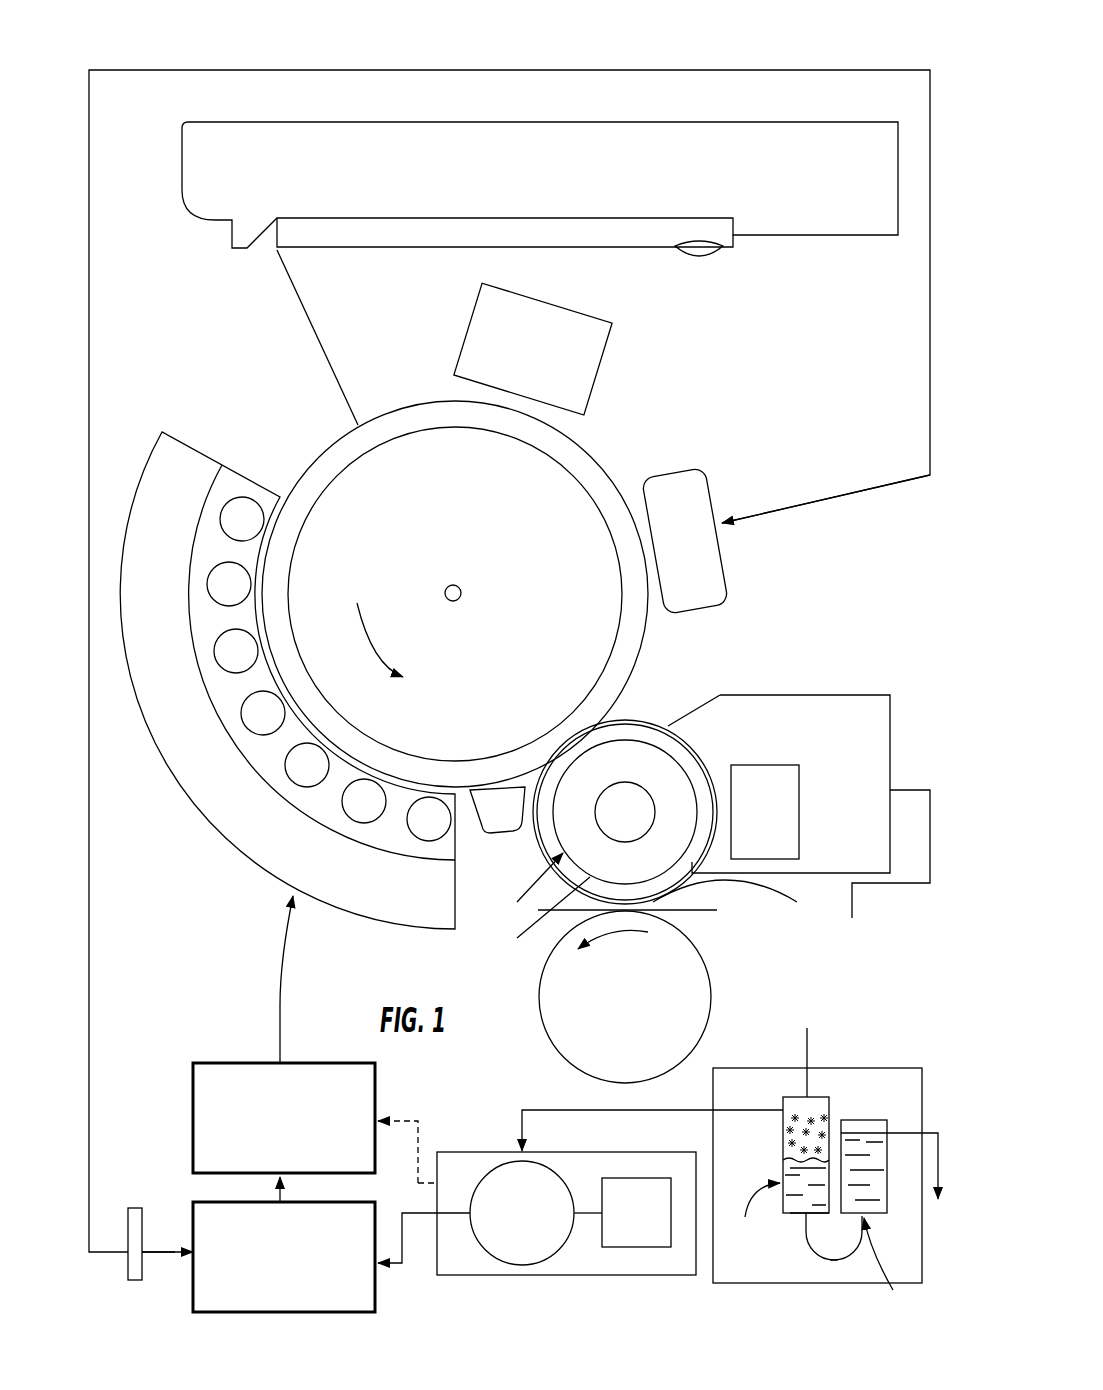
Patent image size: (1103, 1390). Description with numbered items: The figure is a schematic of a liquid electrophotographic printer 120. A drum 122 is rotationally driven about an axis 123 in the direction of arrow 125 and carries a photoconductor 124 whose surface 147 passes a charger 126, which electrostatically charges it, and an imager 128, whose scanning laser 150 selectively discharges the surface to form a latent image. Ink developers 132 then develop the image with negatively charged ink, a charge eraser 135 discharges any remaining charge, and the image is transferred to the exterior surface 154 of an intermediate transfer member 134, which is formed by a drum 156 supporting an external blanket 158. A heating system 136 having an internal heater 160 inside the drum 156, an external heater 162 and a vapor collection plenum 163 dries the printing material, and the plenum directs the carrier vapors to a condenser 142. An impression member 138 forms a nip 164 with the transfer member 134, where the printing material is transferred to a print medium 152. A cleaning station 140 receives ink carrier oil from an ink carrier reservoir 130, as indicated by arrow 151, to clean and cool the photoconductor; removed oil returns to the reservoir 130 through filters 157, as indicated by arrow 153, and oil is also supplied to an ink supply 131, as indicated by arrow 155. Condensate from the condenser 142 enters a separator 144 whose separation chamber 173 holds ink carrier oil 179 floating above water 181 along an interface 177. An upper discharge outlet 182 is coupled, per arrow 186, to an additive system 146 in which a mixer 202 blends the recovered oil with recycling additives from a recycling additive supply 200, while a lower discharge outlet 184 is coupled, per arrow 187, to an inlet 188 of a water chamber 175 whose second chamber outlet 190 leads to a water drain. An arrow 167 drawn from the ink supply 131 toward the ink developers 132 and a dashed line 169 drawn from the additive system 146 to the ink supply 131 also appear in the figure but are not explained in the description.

The printer 120 is at (823, 62).
The imager 128 is at (452, 118).
The laser 150 is at (322, 347).
The charger 126 is at (600, 362).
The surface 147 is at (416, 402).
The photoconductor 124 is at (583, 465).
The drum 122 is at (479, 560).
The axis 123 is at (455, 585).
The arrow 125 is at (381, 612).
The arrow 151 is at (745, 520).
The cleaning station 140 is at (730, 575).
The ink developers 132 is at (283, 880).
The charge eraser 135 is at (478, 835).
The heating system 136 is at (709, 829).
The vapor collection plenum 163 is at (893, 738).
The external heater 162 is at (805, 814).
The exterior surface 154 is at (633, 723).
The external blanket 158 is at (547, 847).
The drum 156 is at (673, 747).
The intermediate transfer member 134 is at (523, 889).
The internal heater 160 is at (536, 920).
The print medium 152 is at (705, 910).
The nip 164 is at (742, 901).
The condenser 142 is at (920, 940).
The impression member 138 is at (680, 1072).
The ink supply line 167 is at (266, 1010).
The ink supply 131 is at (193, 1090).
The arrow 155 is at (280, 1193).
The ink carrier reservoir 130 is at (268, 1313).
The filters 157 is at (133, 1283).
The arrow 153 is at (172, 1255).
The control signal line 169 is at (402, 1120).
The additive system 146 is at (578, 1282).
The mixer 202 is at (558, 1250).
The recycling additive supply 200 is at (640, 1247).
The arrow 186 is at (582, 1108).
The separator 144 is at (744, 1290).
The upper discharge outlet 182 is at (783, 1110).
The ink carrier oil 179 is at (783, 1130).
The interface 177 is at (783, 1160).
The separation chamber 173 is at (754, 1218).
The water chamber 175 is at (888, 1188).
The second chamber outlet 190 is at (888, 1133).
The water 181 is at (870, 1190).
The lower discharge outlet 184 is at (807, 1215).
The arrow 187 is at (852, 1258).
The inlet 188 is at (892, 1272).